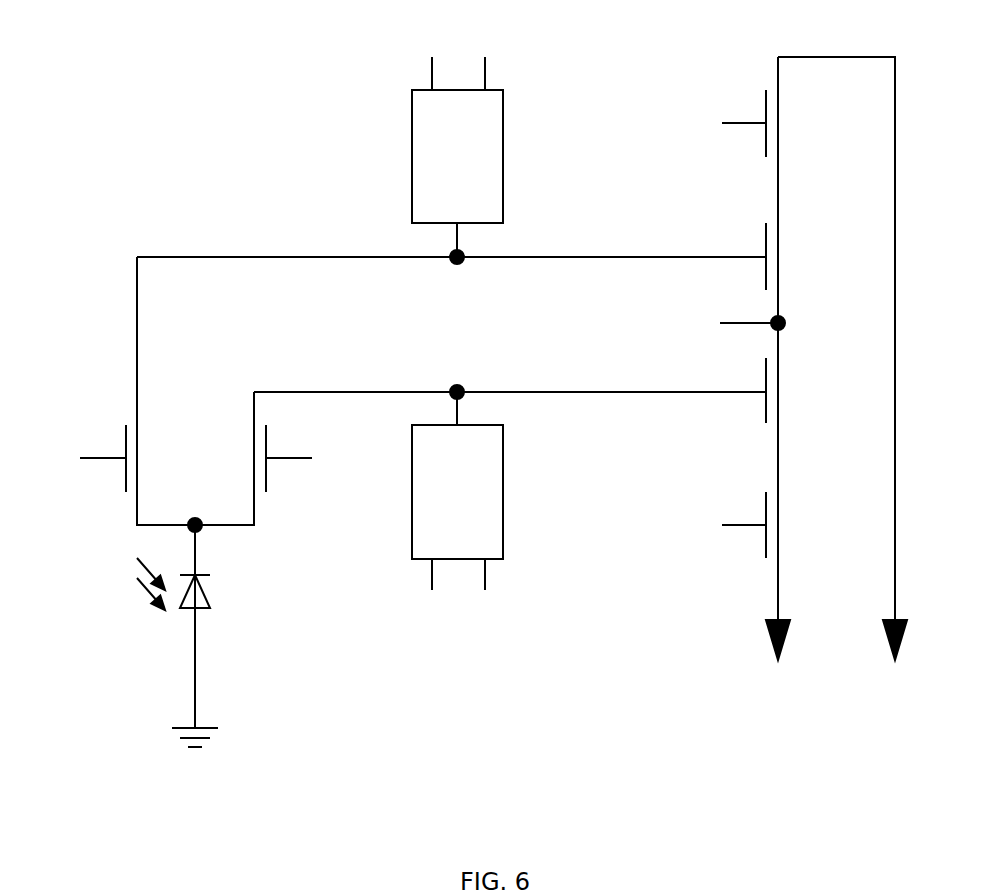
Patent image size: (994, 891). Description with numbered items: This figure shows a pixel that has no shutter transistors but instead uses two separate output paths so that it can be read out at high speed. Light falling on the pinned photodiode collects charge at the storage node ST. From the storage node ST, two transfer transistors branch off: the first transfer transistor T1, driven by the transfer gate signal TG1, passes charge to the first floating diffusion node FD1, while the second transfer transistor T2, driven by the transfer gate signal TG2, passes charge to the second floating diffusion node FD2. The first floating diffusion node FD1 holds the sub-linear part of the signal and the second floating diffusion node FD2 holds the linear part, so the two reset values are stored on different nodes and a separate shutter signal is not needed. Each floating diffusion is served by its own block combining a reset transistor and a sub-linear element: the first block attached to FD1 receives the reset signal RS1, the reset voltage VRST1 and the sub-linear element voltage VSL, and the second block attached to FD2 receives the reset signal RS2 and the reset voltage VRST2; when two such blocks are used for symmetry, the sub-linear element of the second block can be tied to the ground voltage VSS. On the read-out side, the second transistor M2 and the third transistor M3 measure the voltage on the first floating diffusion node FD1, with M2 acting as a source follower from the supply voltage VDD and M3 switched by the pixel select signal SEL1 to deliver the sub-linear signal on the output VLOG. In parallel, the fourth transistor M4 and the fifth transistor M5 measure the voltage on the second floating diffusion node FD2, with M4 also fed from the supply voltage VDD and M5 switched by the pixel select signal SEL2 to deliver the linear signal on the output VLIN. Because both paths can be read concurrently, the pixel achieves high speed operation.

The second floating diffusion node FD2 is at (451, 258).
The first floating diffusion node FD1 is at (510, 393).
The second transfer transistor T2 is at (166, 391).
The first transfer transistor T1 is at (224, 458).
The transfer gate signal for T2 TG2 is at (76, 458).
The transfer gate signal for T1 TG1 is at (316, 458).
The pinned photodiode storage node ST is at (192, 632).
The reset signal for FD2 RS2 is at (503, 156).
The reset signal for FD1 RS1 is at (503, 492).
The reset voltage for FD2 VRST2 is at (402, 55).
The ground voltage VSS is at (497, 55).
The reset voltage for FD1 VRST1 is at (399, 596).
The sub-linear element voltage VSL is at (498, 596).
The logarithmic output VLOG is at (778, 376).
The linear output VLIN is at (847, 376).
The fifth transistor M5 is at (799, 123).
The pixel select signal for the linear path SEL2 is at (713, 129).
The fourth transistor M4 is at (797, 256).
The supply voltage VDD is at (720, 327).
The second transistor M2 is at (795, 390).
The third transistor M3 is at (795, 525).
The pixel select signal for the sub-linear path SEL1 is at (713, 529).